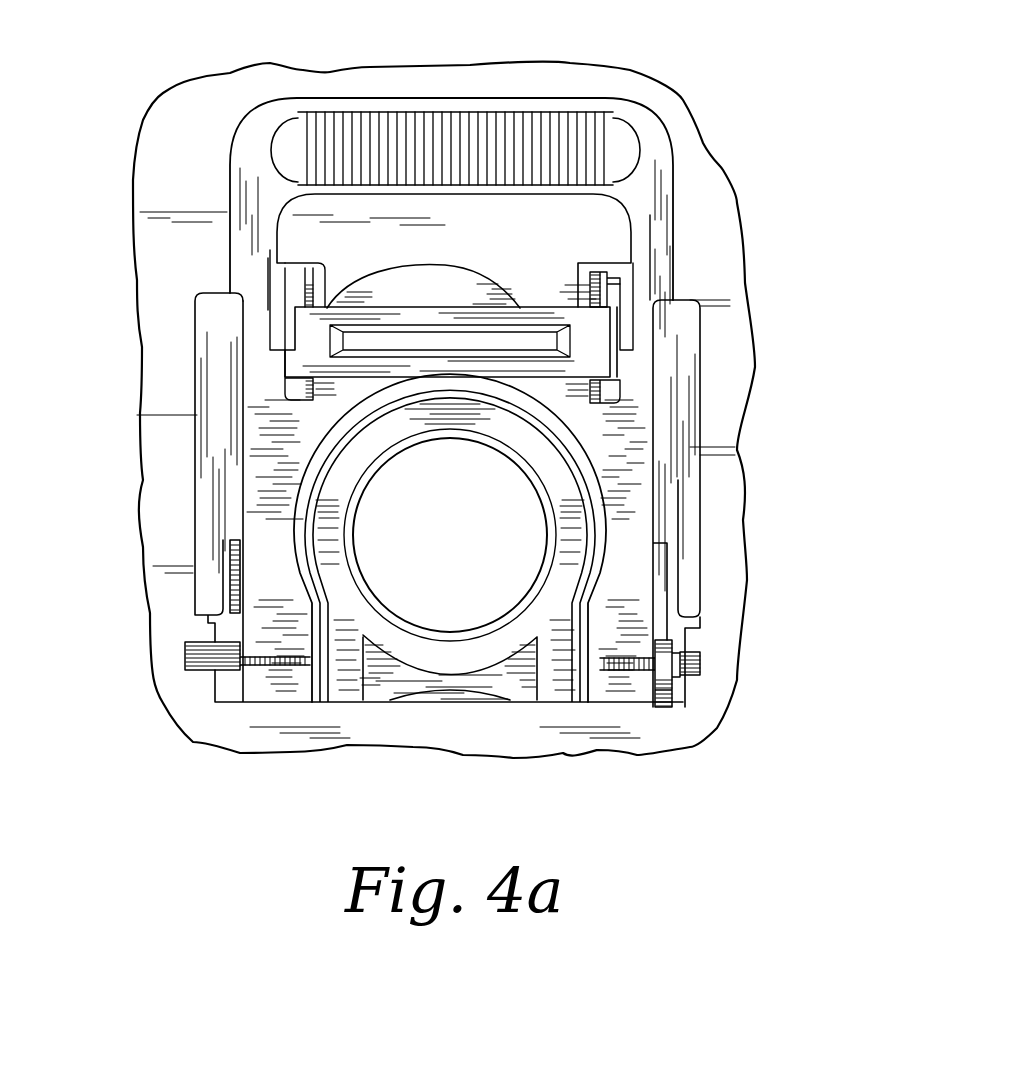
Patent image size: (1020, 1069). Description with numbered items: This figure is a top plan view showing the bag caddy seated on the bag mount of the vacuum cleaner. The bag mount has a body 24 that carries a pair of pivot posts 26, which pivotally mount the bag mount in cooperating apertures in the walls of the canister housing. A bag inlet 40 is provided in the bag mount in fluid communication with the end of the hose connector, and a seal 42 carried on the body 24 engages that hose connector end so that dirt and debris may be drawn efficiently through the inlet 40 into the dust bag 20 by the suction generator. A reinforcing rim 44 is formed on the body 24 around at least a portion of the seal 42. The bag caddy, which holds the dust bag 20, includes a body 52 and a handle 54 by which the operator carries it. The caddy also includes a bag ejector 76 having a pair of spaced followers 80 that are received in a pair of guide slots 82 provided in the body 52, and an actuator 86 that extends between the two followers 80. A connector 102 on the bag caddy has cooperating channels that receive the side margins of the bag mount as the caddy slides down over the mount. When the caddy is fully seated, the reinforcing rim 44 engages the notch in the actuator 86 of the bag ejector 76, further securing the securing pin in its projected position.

The dust bag 20 is at (695, 128).
The body 24 is at (272, 494).
The pivot posts 26 is at (193, 657).
The bag inlet 40 is at (398, 608).
The seal 42 is at (475, 648).
The reinforcing rim 44 is at (585, 457).
The body 52 is at (606, 263).
The handle 54 is at (535, 115).
The bag ejector 76 is at (545, 275).
The followers 80 is at (615, 300).
The guide slots 82 is at (618, 278).
The actuator 86 is at (285, 263).
The connector 102 is at (693, 480).